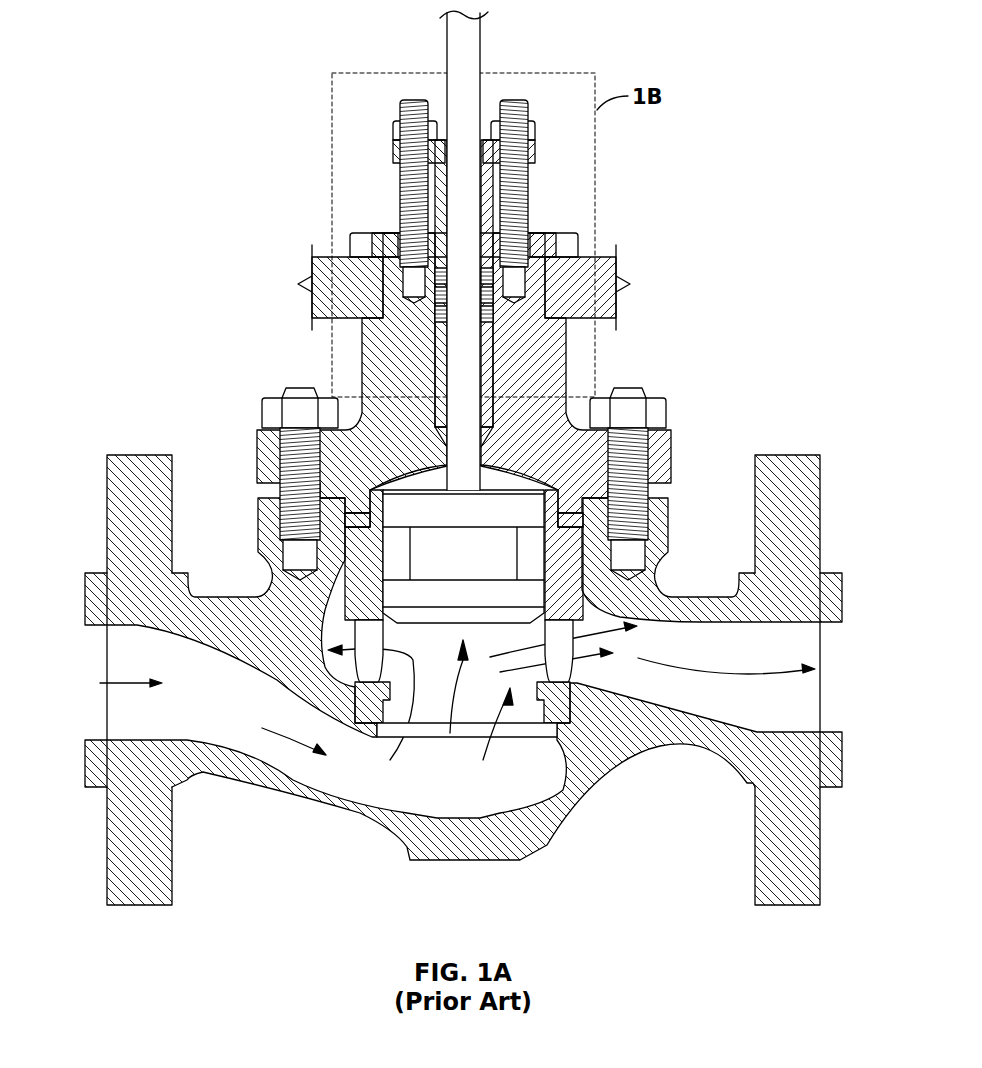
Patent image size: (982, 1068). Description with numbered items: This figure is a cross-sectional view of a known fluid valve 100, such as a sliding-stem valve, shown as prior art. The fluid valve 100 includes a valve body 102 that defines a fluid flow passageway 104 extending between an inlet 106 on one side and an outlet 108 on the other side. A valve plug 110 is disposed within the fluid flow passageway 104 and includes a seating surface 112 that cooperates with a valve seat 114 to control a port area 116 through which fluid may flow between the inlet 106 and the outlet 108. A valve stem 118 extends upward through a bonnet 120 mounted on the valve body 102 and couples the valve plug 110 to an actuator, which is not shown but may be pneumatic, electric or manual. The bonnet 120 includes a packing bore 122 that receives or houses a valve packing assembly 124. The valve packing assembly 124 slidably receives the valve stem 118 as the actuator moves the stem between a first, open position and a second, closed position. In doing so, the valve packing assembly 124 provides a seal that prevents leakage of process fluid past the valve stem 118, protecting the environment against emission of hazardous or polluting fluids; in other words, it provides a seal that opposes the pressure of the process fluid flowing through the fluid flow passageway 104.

The fluid valve 100 is at (250, 41).
The valve body 102 is at (300, 800).
The fluid flow passageway 104 is at (233, 701).
The inlet 106 is at (85, 652).
The outlet 108 is at (832, 655).
The valve plug 110 is at (397, 555).
The seating surface 112 is at (577, 607).
The valve seat 114 is at (447, 745).
The port area 116 is at (433, 727).
The valve stem 118 is at (447, 50).
The bonnet 120 is at (558, 387).
The packing bore 122 is at (433, 368).
The valve packing assembly 124 is at (497, 308).